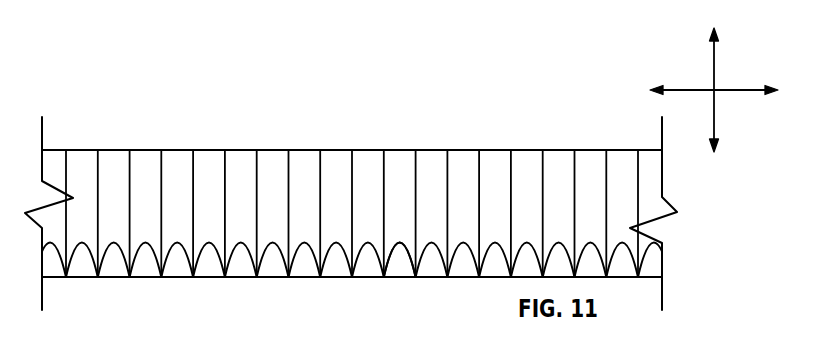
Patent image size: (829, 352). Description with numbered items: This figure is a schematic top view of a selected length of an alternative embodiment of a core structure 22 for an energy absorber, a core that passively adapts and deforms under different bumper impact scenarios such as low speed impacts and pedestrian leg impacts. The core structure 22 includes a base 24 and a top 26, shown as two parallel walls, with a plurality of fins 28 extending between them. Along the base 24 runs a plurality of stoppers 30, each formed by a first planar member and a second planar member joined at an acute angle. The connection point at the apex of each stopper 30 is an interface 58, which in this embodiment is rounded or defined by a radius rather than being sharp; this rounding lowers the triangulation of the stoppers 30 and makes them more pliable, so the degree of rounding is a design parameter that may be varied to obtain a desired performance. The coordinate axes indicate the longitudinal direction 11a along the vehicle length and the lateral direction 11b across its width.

The core structure 22 is at (500, 131).
The base 24 is at (338, 278).
The top 26 is at (310, 149).
The fins 28 is at (353, 173).
The stoppers 30 is at (432, 224).
The interface 58 is at (400, 234).
The longitudinal direction 11a is at (712, 65).
The lateral direction 11b is at (690, 89).